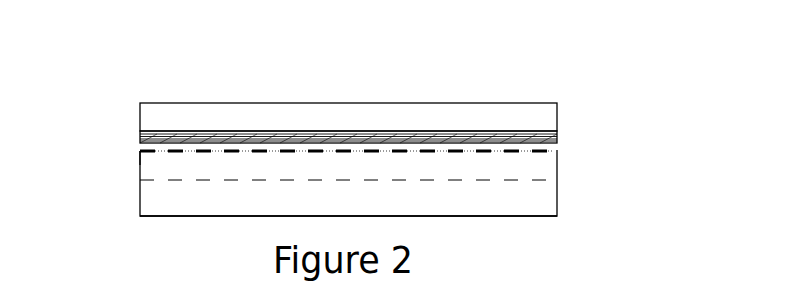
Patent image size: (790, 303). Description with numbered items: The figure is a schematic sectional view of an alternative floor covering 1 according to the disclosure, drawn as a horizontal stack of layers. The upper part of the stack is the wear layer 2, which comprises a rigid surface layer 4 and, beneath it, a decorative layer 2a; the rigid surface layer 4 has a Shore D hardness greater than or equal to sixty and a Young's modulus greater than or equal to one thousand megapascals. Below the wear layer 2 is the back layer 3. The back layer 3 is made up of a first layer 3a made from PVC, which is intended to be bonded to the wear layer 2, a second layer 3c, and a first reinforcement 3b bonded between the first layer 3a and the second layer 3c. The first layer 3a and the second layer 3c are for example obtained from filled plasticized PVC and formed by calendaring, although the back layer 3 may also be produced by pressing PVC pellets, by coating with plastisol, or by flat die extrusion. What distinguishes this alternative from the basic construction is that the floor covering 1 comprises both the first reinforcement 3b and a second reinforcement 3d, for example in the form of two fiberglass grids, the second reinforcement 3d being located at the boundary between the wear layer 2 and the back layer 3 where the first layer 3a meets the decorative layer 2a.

The floor covering 1 is at (588, 73).
The wear layer 2 is at (126, 103).
The decorative layer 2a is at (557, 140).
The back layer 3 is at (126, 157).
The first layer 3a is at (547, 173).
The first reinforcement 3b is at (555, 185).
The second layer 3c is at (555, 212).
The second reinforcement 3d is at (140, 152).
The rigid surface layer 4 is at (552, 117).